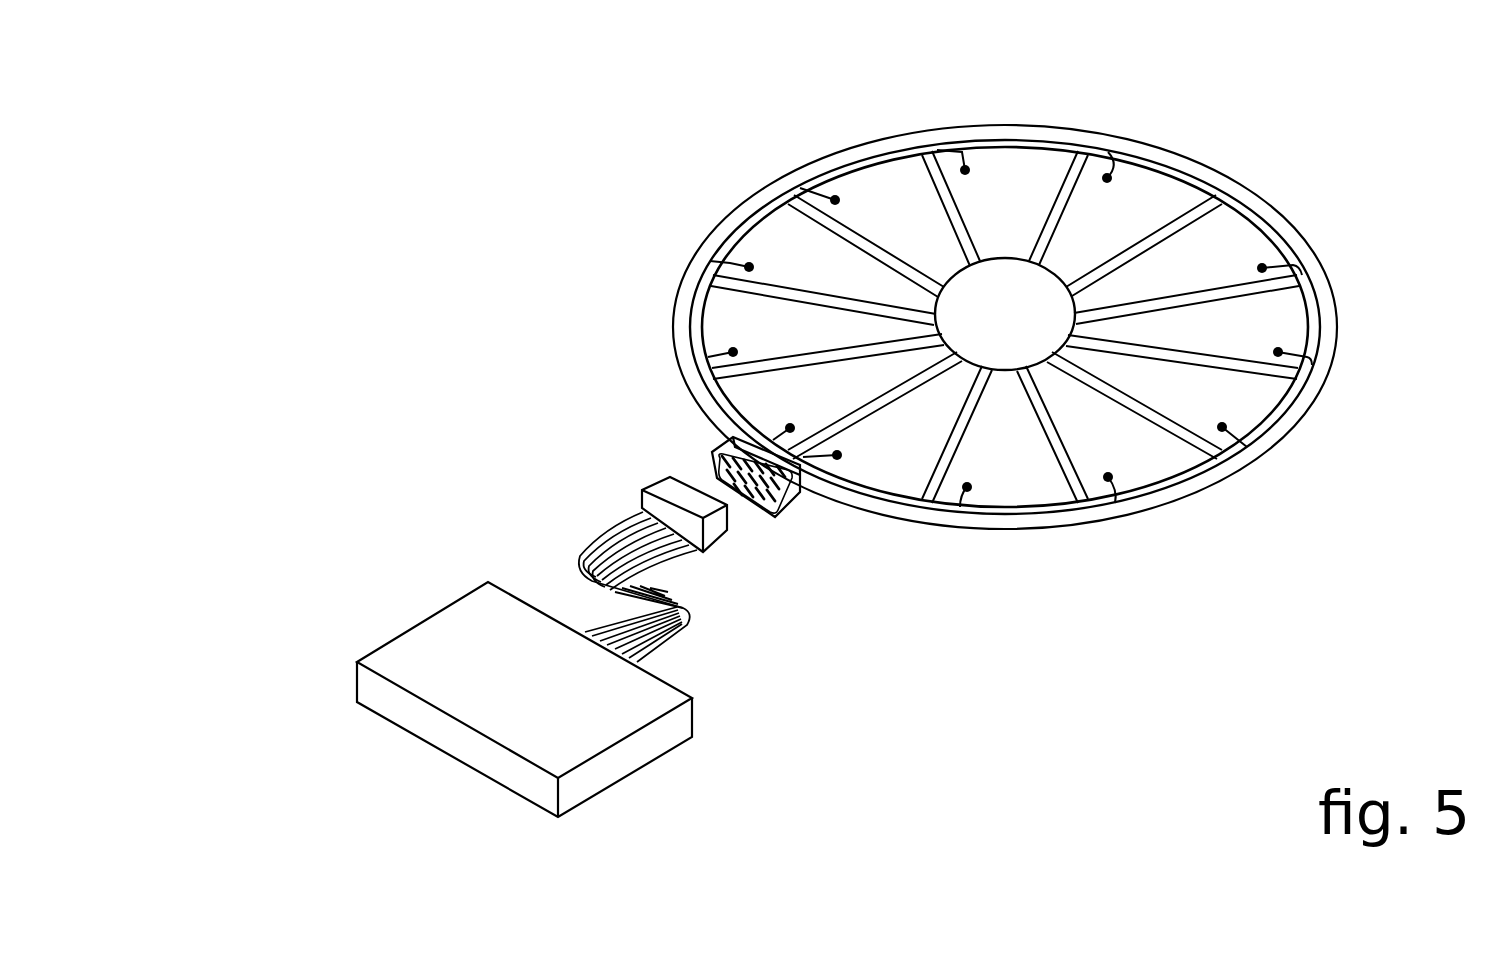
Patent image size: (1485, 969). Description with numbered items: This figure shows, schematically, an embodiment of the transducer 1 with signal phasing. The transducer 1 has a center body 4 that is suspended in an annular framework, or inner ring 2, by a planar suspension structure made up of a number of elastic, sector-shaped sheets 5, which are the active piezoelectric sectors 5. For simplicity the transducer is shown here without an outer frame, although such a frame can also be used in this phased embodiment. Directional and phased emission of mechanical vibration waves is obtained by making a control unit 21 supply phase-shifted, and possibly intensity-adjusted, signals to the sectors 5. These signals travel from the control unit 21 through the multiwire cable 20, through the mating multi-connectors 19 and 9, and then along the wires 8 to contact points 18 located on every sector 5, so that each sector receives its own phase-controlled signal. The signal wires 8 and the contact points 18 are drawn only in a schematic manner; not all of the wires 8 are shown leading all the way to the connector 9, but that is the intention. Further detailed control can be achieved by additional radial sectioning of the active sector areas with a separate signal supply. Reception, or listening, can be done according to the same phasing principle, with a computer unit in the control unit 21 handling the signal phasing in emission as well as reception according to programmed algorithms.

The transducer 1 is at (1005, 276).
The annular framework (inner ring) 2 is at (1283, 225).
The center body 4 is at (1043, 328).
The sector-shaped sheets (sectors) 5 is at (790, 223).
The wires 8 is at (1160, 492).
The connector 9 is at (708, 447).
The contact points 18 is at (873, 200).
The multi-connector 19 is at (636, 502).
The multiwire cable 20 is at (567, 558).
The control unit 21 is at (408, 615).